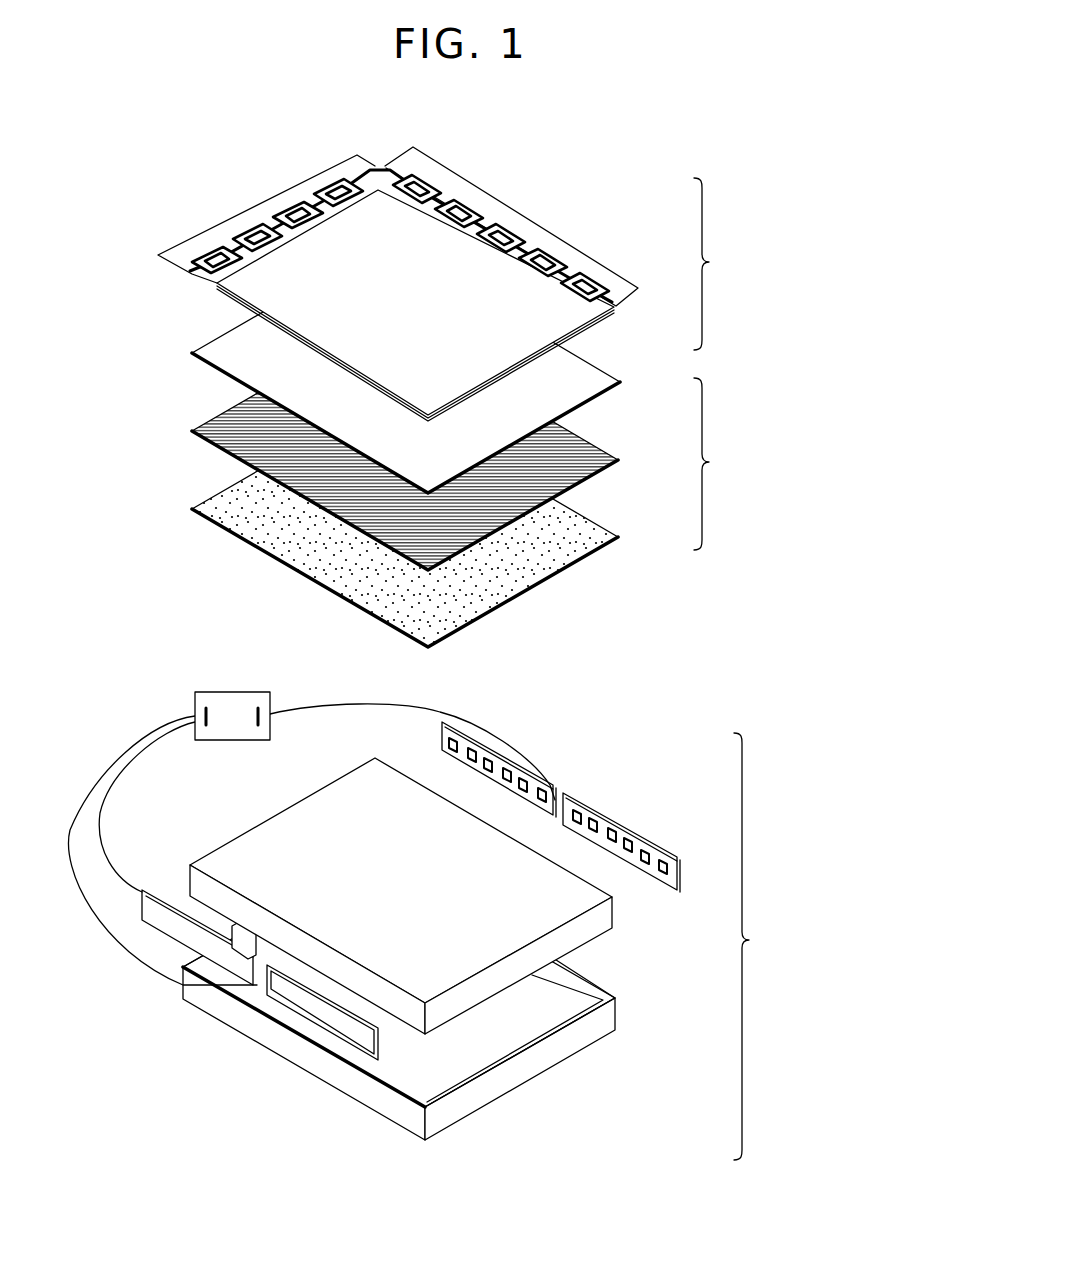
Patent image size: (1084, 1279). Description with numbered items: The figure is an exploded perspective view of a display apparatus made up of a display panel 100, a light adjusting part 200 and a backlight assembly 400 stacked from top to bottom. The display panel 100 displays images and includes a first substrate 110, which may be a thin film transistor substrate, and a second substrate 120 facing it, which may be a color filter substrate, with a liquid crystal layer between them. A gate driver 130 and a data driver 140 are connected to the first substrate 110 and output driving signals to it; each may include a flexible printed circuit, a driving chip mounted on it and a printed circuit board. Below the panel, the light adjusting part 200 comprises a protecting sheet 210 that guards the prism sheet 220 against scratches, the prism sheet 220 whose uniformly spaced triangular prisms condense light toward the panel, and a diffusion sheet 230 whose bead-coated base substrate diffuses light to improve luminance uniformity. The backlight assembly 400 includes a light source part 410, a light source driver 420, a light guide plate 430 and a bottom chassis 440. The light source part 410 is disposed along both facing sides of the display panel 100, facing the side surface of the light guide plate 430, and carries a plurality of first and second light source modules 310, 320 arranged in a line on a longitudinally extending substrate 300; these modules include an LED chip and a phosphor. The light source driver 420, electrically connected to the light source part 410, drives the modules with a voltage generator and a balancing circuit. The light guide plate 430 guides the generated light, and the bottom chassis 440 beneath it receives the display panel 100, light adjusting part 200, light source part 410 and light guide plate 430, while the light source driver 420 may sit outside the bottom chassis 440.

The display panel 100 is at (724, 264).
The first substrate 110 is at (613, 306).
The second substrate 120 is at (563, 315).
The gate driver 130 is at (222, 237).
The data driver 140 is at (468, 190).
The light adjusting part 200 is at (724, 464).
The protecting sheet 210 is at (620, 382).
The prism sheet 220 is at (618, 460).
The diffusion sheet 230 is at (618, 537).
The substrate 300 is at (663, 847).
The first light source module 310 is at (663, 872).
The second light source module 320 is at (646, 868).
The backlight assembly 400 is at (764, 946).
The light source part 410 is at (627, 828).
The light source driver 420 is at (232, 692).
The light guide plate 430 is at (460, 937).
The bottom chassis 440 is at (612, 1011).